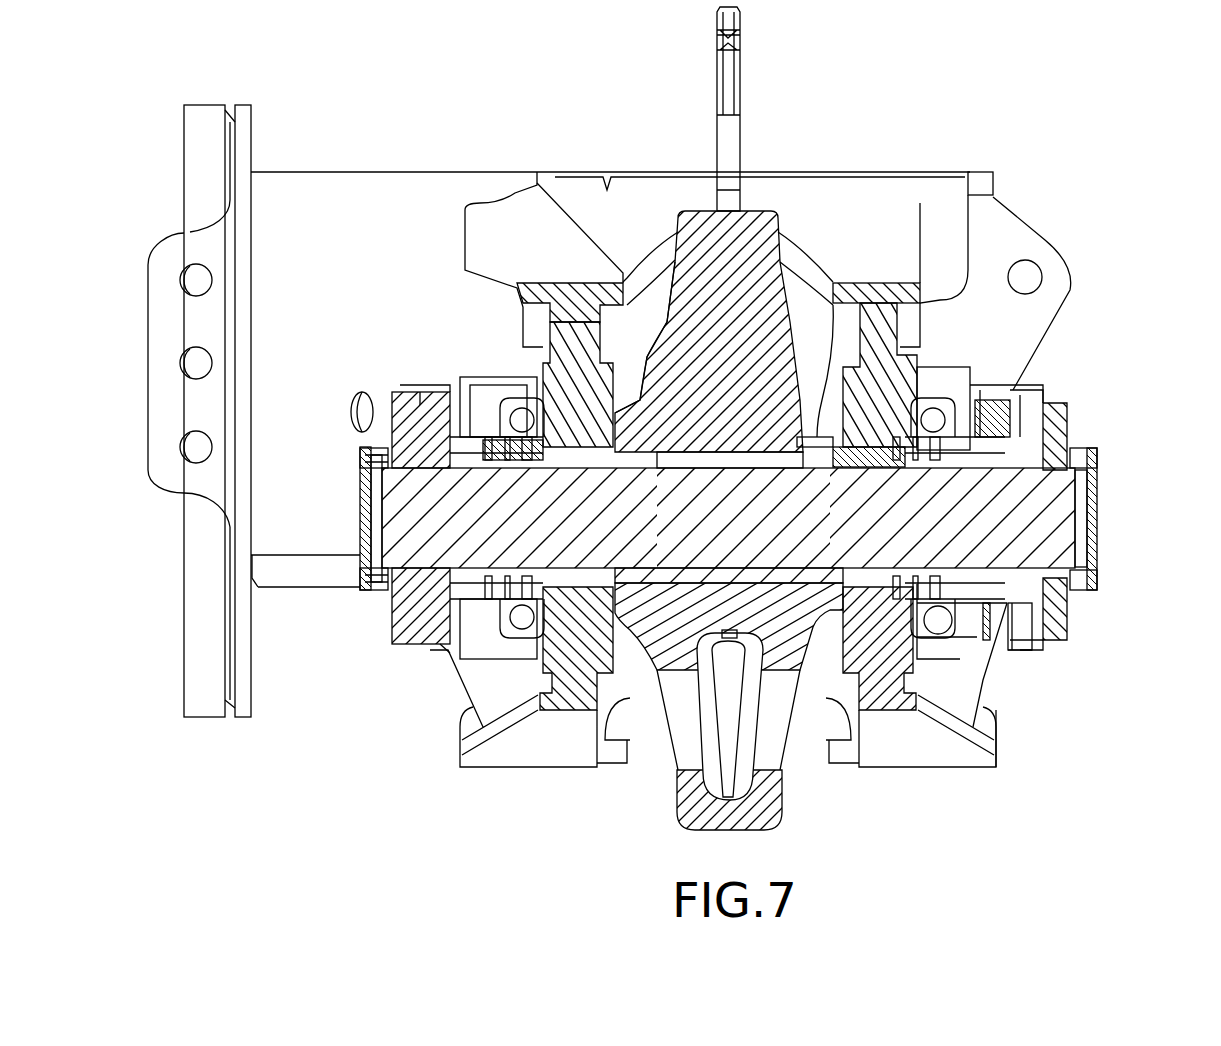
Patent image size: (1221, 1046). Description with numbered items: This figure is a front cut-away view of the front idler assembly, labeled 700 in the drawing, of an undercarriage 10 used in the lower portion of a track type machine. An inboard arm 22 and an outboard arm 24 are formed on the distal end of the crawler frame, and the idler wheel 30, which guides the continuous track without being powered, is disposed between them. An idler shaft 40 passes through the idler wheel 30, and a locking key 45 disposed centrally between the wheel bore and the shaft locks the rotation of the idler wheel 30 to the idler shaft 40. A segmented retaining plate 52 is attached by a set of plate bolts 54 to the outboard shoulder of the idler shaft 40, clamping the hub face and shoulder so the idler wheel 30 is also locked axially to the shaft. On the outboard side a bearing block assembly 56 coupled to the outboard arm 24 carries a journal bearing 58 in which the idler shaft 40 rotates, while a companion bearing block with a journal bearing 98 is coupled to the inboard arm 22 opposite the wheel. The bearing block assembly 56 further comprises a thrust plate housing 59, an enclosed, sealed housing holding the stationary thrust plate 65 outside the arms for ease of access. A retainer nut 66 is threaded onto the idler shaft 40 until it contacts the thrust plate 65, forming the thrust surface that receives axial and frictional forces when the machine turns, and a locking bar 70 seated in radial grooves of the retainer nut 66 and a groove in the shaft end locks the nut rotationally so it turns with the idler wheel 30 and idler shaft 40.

The mounting bracket 700 is at (332, 157).
The undercarriage 10 is at (1058, 135).
The inboard arm 22 is at (570, 323).
The outboard arm 24 is at (895, 390).
The idler wheel 30 is at (698, 207).
The locking key 45 is at (680, 345).
The segmented retaining plate 52 is at (848, 410).
The plate bolts 54 is at (822, 436).
The journal bearing 98 is at (562, 477).
The idler shaft 40 is at (447, 530).
The locking bar 70 is at (356, 545).
The bearing block assembly 56 is at (935, 470).
The retainer nut 66 is at (1085, 412).
The journal bearing 58 is at (898, 480).
The thrust plate 65 is at (1021, 643).
The thrust plate housing 59 is at (1001, 659).